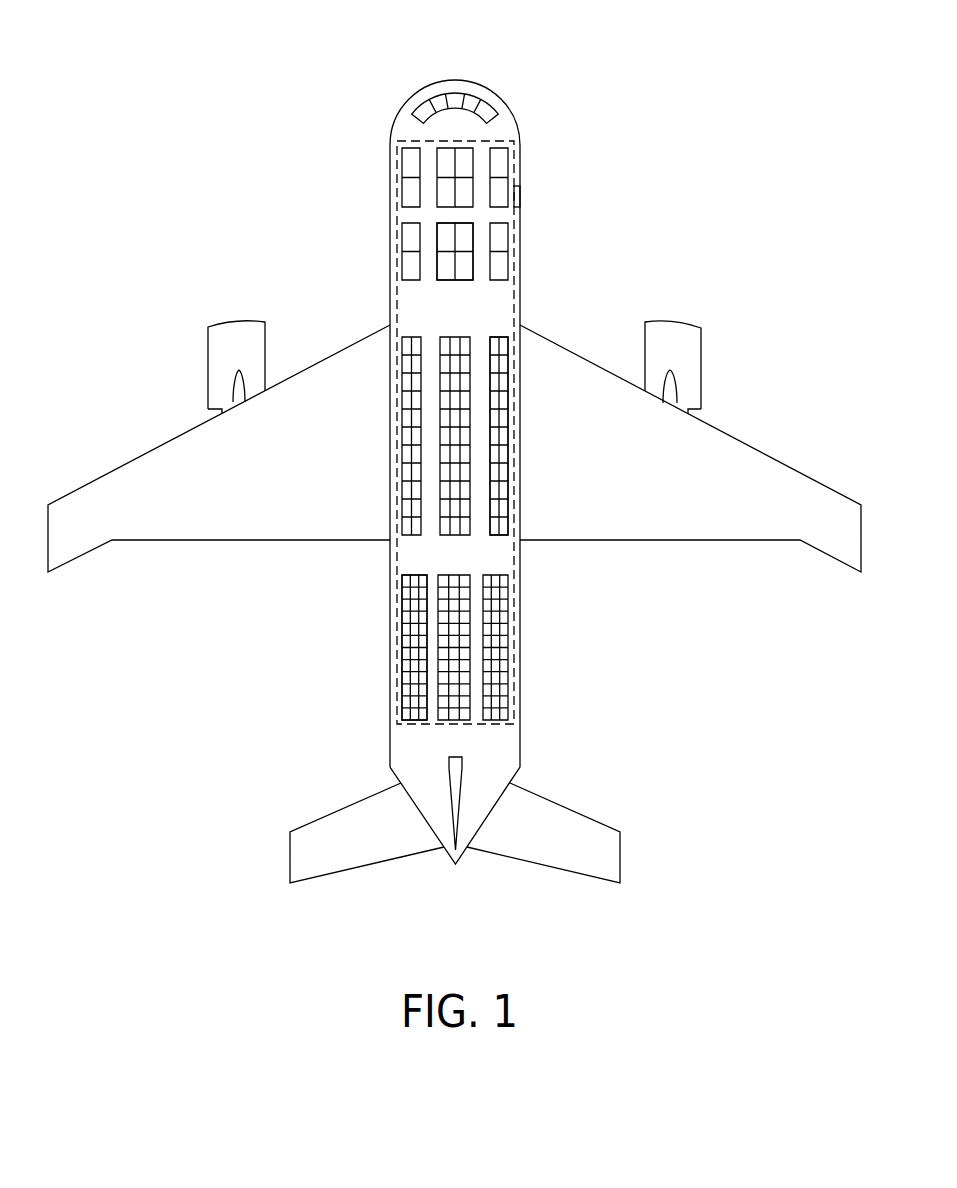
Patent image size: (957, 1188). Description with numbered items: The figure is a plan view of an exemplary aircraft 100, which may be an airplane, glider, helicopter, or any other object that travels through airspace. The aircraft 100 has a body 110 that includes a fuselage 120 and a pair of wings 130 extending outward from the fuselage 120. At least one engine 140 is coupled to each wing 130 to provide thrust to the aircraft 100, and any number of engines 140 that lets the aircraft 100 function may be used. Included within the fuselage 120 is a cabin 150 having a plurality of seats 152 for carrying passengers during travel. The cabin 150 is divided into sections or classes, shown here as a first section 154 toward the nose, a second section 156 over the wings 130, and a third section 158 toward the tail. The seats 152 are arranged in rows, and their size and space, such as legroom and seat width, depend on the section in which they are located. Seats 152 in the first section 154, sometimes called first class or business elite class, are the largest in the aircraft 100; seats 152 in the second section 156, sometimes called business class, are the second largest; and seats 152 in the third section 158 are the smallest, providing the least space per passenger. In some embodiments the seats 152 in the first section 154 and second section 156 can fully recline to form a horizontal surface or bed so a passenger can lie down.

The aircraft 100 is at (346, 72).
The body 110 is at (520, 745).
The fuselage 120 is at (518, 143).
The wings 130 is at (708, 460).
The engine 140 is at (221, 345).
The cabin 150 is at (396, 681).
The seats 152 is at (498, 264).
The first section 154 is at (380, 152).
The second section 156 is at (380, 540).
The third section 158 is at (530, 575).